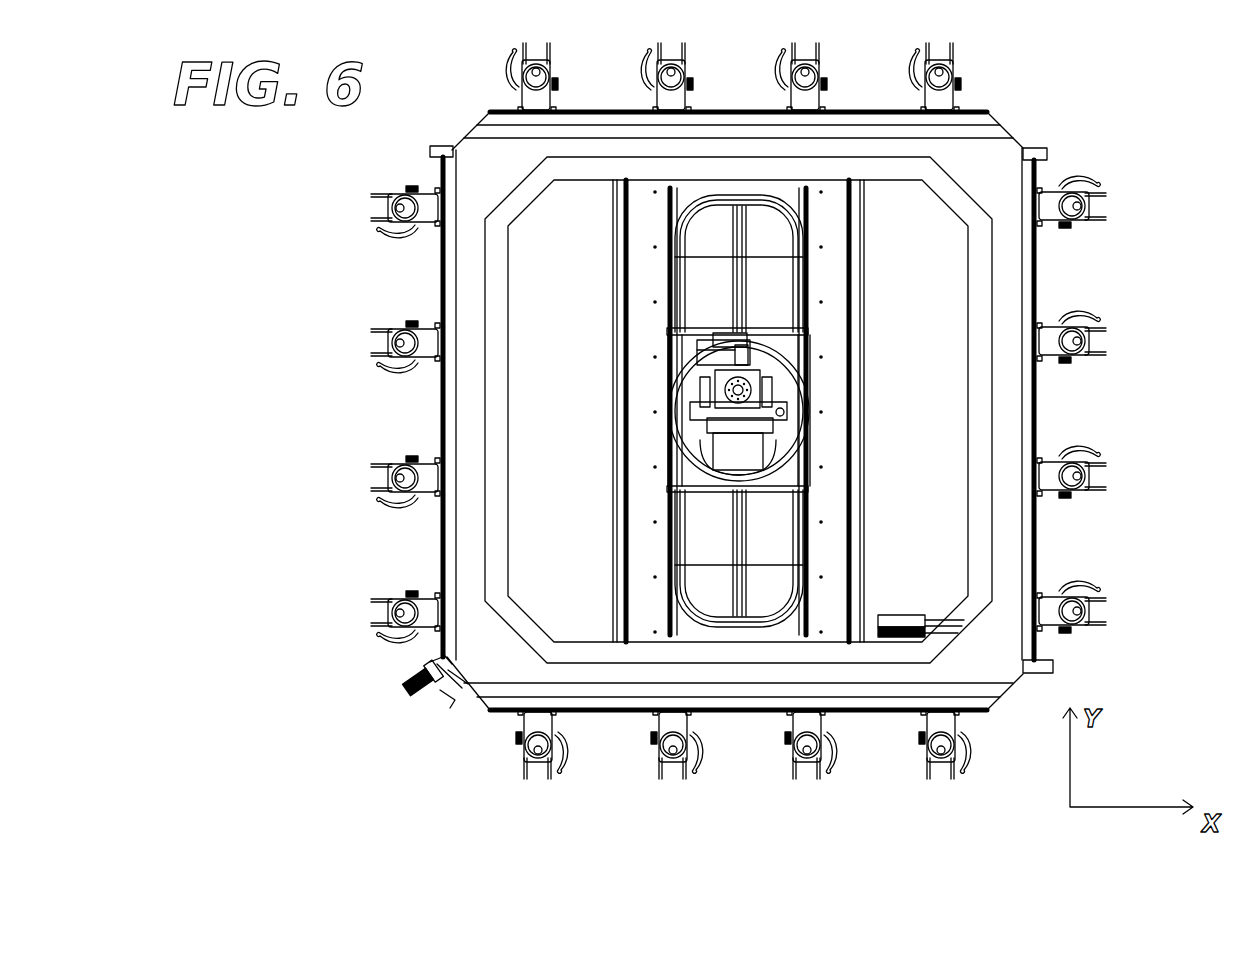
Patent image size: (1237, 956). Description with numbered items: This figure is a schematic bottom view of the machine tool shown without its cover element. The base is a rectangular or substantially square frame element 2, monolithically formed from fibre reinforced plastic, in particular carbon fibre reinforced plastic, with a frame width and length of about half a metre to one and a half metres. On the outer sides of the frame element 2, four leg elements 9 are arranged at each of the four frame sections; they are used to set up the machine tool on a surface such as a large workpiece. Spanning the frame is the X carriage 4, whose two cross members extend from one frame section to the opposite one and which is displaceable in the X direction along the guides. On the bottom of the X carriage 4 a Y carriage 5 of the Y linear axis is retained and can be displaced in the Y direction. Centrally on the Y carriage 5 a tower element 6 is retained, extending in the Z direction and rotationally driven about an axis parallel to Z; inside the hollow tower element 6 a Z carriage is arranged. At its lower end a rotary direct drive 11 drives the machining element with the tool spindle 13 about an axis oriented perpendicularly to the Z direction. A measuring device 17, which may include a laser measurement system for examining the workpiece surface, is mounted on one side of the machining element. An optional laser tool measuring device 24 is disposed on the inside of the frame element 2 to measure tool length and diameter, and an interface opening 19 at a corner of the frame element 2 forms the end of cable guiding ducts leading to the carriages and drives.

The frame element 2 is at (995, 172).
The X carriage 4 is at (728, 192).
The Y carriage 5 is at (800, 356).
The tower element 6 is at (790, 389).
The leg elements 9 is at (405, 196).
The rotary direct drive 11 is at (750, 452).
The tool spindle 13 is at (720, 378).
The measuring device 17 is at (700, 355).
The interface opening 19 is at (436, 696).
The laser tool measuring device 24 is at (910, 612).